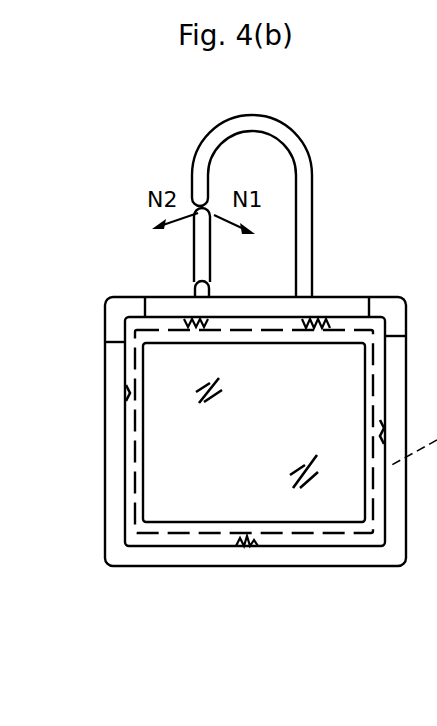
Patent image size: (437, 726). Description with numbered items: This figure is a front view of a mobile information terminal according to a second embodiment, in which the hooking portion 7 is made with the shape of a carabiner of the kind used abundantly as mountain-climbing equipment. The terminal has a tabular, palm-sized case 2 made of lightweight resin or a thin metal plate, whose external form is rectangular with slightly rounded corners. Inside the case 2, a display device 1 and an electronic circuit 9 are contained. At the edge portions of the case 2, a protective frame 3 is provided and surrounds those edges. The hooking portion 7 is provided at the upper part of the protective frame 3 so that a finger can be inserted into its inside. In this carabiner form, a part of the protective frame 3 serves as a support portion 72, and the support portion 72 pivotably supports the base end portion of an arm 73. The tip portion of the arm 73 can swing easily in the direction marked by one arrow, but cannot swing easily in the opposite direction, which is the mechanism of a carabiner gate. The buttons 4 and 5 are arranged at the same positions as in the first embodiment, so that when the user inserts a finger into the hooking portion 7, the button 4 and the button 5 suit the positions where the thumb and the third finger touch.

The display device 1 is at (165, 474).
The case 2 is at (328, 537).
The protective frame 3 is at (207, 553).
The button 4 is at (117, 317).
The button 5 is at (393, 295).
The hooking portion 7 is at (301, 170).
The electronic circuit 9 is at (0, 380).
The support portion 72 is at (200, 292).
The arm 73 is at (206, 246).